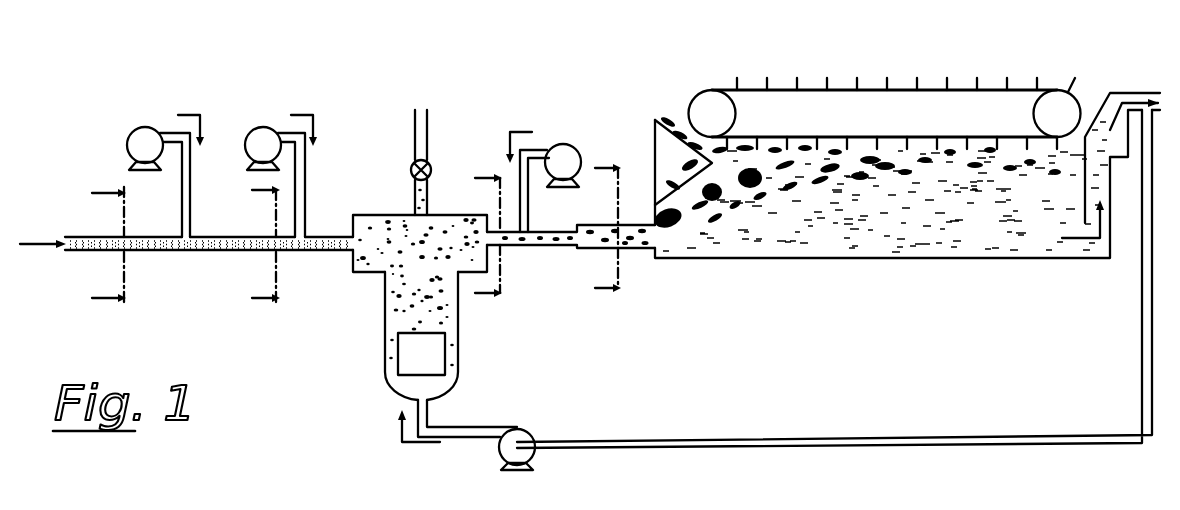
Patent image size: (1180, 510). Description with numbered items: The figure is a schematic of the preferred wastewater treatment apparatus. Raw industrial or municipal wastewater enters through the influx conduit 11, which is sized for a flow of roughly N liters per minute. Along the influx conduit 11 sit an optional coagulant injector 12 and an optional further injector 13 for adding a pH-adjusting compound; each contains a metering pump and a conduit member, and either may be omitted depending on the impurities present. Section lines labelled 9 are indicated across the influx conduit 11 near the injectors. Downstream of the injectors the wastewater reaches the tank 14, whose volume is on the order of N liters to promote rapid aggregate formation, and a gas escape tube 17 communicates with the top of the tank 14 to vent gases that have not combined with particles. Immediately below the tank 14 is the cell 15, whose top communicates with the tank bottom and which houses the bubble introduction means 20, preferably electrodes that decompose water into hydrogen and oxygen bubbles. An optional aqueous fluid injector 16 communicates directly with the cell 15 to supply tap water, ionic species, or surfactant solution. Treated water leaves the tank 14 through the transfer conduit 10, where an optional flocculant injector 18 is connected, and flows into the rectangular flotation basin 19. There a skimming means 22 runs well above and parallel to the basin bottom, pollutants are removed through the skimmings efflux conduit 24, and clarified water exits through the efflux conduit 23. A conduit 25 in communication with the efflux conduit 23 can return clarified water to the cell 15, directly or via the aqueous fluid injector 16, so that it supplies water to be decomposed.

The section line 9- 9 is at (109, 244).
The transfer conduit 10 is at (553, 250).
The influx conduit 11 is at (240, 253).
The coagulant injector 12 is at (148, 140).
The further injector 13 is at (262, 140).
The tank 14 is at (378, 215).
The cell 15 is at (385, 335).
The aqueous fluid injector 16 is at (517, 430).
The gas escape tube 17 is at (415, 138).
The flocculant injector 18 is at (563, 145).
The flotation basin 19 is at (1002, 258).
The bubble introduction means 20 is at (408, 365).
The skimming means 22 is at (755, 108).
The efflux conduit 23 is at (1150, 94).
The skimmings efflux conduit 24 is at (677, 112).
The conduit 25 is at (1022, 438).